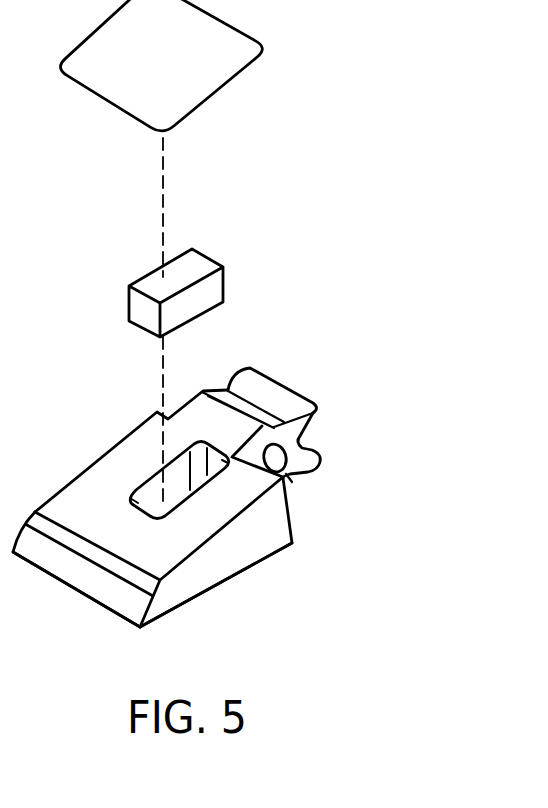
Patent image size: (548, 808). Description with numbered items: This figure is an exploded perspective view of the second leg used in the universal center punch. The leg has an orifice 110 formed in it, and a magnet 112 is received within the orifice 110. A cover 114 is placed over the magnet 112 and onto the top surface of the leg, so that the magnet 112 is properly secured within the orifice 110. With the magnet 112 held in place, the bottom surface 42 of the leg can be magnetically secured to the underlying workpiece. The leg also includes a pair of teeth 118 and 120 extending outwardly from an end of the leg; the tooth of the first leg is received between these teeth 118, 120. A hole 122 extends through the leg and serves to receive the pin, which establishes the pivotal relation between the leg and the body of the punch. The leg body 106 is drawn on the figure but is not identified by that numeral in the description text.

The base 42 is at (190, 600).
The clip body 106 is at (103, 470).
The slot 110 is at (170, 503).
The magnet 112 is at (216, 289).
The cover plate 114 is at (197, 105).
The rib 118 is at (315, 408).
The tab 120 is at (318, 458).
The hole 122 is at (289, 474).